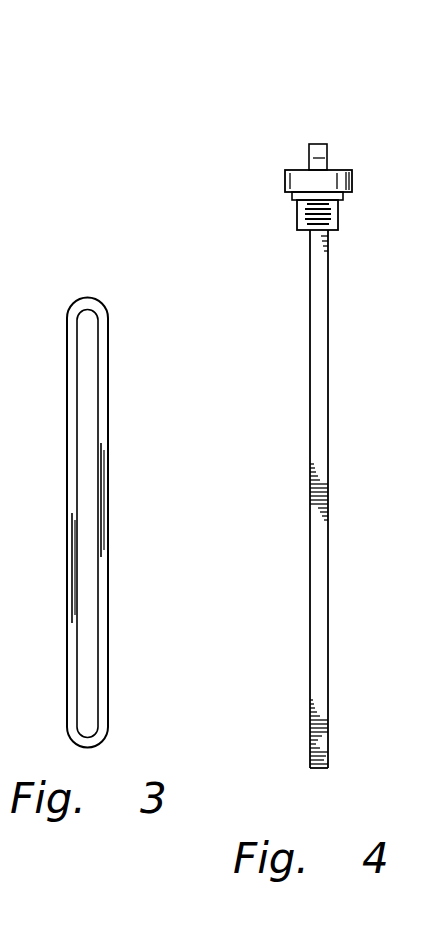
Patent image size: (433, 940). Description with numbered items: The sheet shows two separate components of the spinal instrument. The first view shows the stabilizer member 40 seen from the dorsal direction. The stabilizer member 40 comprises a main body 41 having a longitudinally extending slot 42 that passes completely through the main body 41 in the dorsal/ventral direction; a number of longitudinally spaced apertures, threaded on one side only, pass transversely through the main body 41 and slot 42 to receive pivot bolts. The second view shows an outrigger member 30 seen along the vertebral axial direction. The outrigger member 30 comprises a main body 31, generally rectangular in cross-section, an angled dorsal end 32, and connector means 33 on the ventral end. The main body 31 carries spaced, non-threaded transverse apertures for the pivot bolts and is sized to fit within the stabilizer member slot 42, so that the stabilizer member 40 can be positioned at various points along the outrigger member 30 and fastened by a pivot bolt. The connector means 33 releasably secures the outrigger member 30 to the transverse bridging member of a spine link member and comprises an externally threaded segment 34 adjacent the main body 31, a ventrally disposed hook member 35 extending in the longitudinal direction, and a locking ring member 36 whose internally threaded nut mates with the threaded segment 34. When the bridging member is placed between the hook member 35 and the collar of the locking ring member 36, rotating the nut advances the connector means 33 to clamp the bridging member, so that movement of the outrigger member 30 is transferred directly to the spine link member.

In FIG. 4, the outrigger member 30 is at (312, 414).
In FIG. 4, the main body 31 is at (328, 535).
In FIG. 4, the angled dorsal end 32 is at (328, 752).
In FIG. 4, the connector means 33 is at (303, 155).
In FIG. 4, the externally threaded segment 34 is at (340, 213).
In FIG. 4, the hook member 35 is at (318, 144).
In FIG. 4, the locking ring member 36 is at (285, 173).
In FIG. 3, the stabilizer member 40 is at (125, 453).
In FIG. 3, the main body 41 is at (105, 517).
In FIG. 3, the longitudinally extending slot 42 is at (88, 551).